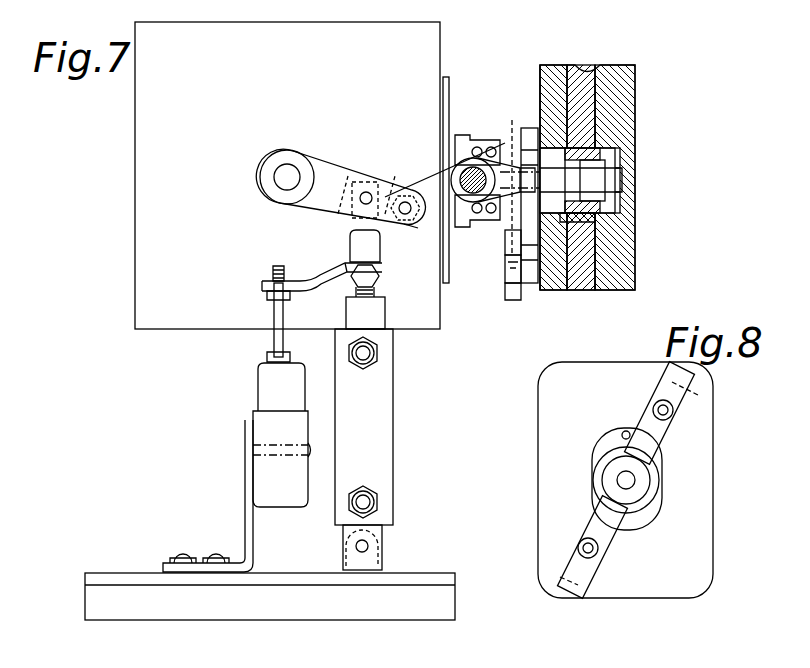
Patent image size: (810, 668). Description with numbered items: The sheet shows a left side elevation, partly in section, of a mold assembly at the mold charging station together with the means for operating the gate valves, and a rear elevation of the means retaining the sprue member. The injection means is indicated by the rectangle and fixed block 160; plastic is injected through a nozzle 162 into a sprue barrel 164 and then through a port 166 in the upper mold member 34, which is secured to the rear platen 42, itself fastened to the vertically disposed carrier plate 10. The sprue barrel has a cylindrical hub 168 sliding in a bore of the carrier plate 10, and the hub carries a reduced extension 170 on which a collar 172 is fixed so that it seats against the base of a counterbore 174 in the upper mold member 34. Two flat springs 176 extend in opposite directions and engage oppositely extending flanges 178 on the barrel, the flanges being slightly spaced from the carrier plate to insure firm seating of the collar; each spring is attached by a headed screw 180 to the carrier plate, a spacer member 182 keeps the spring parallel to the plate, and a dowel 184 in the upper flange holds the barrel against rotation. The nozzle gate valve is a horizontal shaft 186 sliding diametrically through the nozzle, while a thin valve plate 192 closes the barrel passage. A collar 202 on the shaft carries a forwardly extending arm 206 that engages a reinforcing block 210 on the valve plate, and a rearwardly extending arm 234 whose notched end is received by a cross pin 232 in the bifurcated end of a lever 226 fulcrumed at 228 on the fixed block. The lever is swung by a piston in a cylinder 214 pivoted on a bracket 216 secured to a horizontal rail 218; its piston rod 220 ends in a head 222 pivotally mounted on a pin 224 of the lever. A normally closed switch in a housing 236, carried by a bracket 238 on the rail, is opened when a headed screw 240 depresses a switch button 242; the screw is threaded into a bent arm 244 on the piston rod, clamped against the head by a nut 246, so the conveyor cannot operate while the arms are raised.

In FIG. 7, the carrier plate 10 is at (560, 68).
In FIG. 8, the carrier plate 10 is at (697, 568).
In FIG. 7, the upper mold member 34 is at (622, 262).
In FIG. 7, the rear platen 42 is at (588, 67).
In FIG. 7, the injection means 160 is at (146, 164).
In FIG. 7, the nozzle 162 is at (488, 158).
In FIG. 7, the sprue barrel 164 is at (518, 232).
In FIG. 8, the sprue barrel 164 is at (652, 492).
In FIG. 7, the port 166 is at (624, 178).
In FIG. 7, the cylindrical hub 168 is at (548, 158).
In FIG. 7, the extension 170 is at (596, 176).
In FIG. 7, the collar 172 is at (610, 150).
In FIG. 7, the counterbore 174 is at (617, 196).
In FIG. 7, the flat springs 176 is at (520, 290).
In FIG. 8, the flat springs 176 is at (672, 432).
In FIG. 7, the flanges 178 is at (524, 256).
In FIG. 8, the flanges 178 is at (600, 444).
In FIG. 7, the headed screw 180 is at (519, 240).
In FIG. 8, the headed screw 180 is at (670, 412).
In FIG. 7, the spacer member 182 is at (528, 292).
In FIG. 8, the spacer member 182 is at (704, 398).
In FIG. 8, the dowel 184 is at (624, 431).
In FIG. 7, the valve shaft 186 is at (458, 184).
In FIG. 7, the valve plate 192 is at (511, 135).
In FIG. 7, the collar 202 is at (406, 202).
In FIG. 7, the arm 206 is at (494, 224).
In FIG. 7, the reinforcing block 210 is at (575, 205).
In FIG. 7, the cylinder 214 is at (389, 437).
In FIG. 7, the bracket 216 is at (383, 569).
In FIG. 7, the horizontal rail 218 is at (425, 608).
In FIG. 7, the piston rod 220 is at (380, 291).
In FIG. 7, the head 222 is at (352, 240).
In FIG. 7, the pin 224 is at (366, 192).
In FIG. 7, the lever 226 is at (330, 176).
In FIG. 7, the fulcrum 228 is at (286, 176).
In FIG. 7, the cross pin 232 is at (402, 200).
In FIG. 7, the arm 234 is at (420, 221).
In FIG. 7, the housing 236 is at (262, 392).
In FIG. 7, the bracket 238 is at (245, 525).
In FIG. 7, the headed screw 240 is at (276, 342).
In FIG. 7, the switch button 242 is at (288, 362).
In FIG. 7, the bent arm 244 is at (318, 273).
In FIG. 7, the nut 246 is at (347, 272).